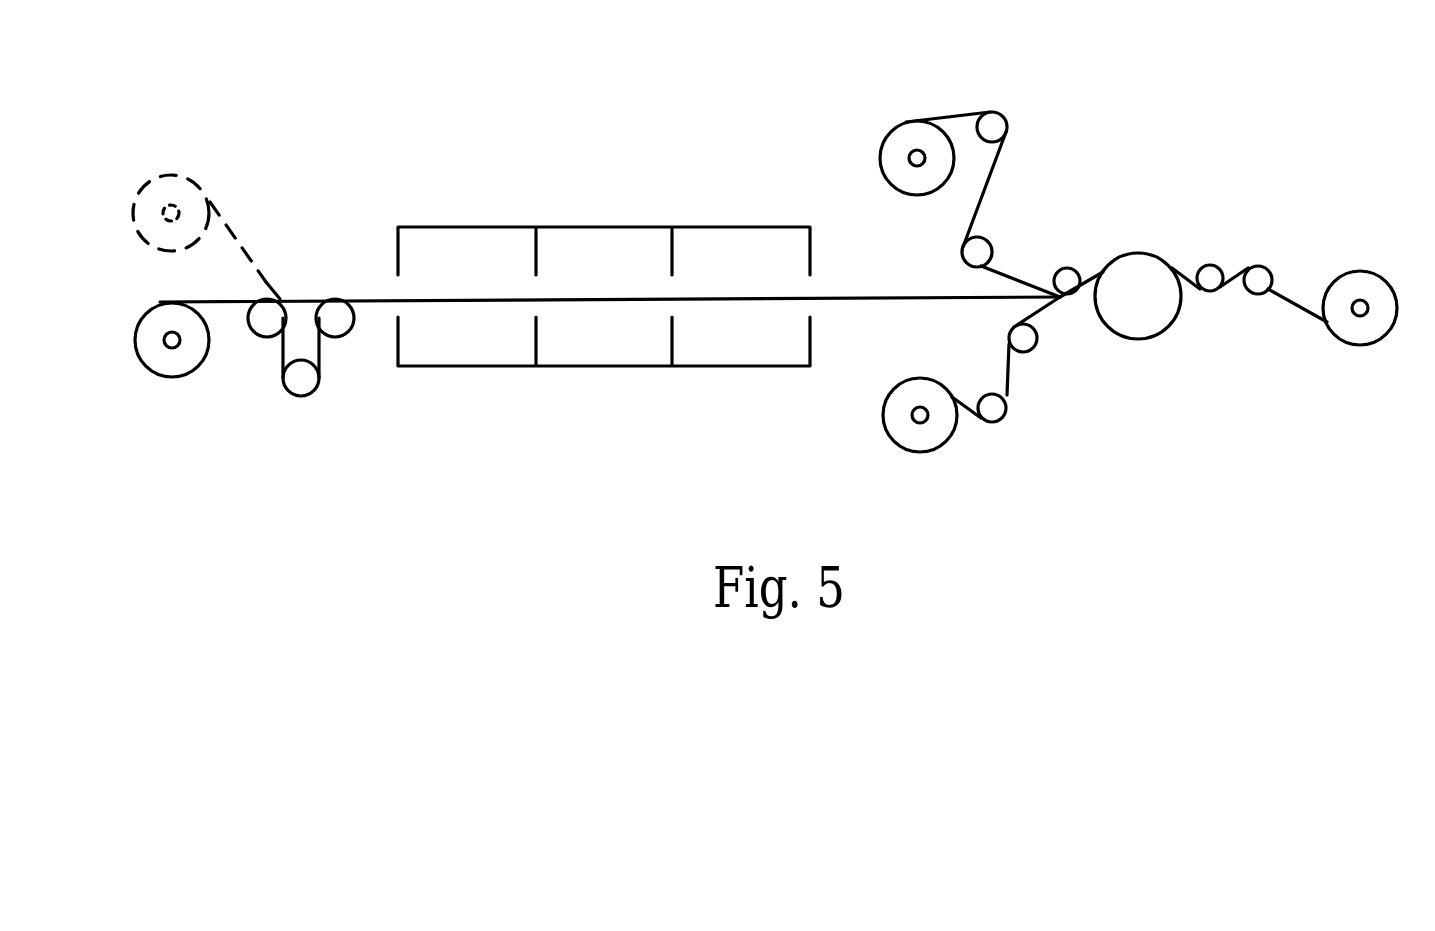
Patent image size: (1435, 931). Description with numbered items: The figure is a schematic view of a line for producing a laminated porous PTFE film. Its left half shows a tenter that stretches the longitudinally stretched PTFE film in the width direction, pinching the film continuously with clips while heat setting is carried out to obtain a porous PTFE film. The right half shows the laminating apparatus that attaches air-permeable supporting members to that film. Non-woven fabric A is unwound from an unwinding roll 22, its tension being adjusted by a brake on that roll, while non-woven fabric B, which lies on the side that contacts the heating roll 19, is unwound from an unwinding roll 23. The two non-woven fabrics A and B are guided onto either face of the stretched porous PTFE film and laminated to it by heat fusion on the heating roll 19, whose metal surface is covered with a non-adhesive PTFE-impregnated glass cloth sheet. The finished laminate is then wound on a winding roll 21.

The heating roll 19 is at (1157, 337).
The winding roll 21 is at (1373, 280).
The unwinding roll 22 is at (897, 130).
The unwinding roll 23 is at (890, 445).
The non-woven fabric A is at (992, 170).
The non-woven fabric B is at (1010, 375).